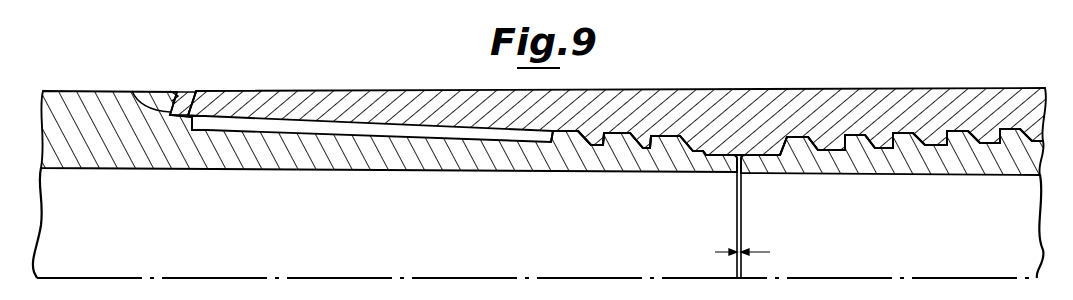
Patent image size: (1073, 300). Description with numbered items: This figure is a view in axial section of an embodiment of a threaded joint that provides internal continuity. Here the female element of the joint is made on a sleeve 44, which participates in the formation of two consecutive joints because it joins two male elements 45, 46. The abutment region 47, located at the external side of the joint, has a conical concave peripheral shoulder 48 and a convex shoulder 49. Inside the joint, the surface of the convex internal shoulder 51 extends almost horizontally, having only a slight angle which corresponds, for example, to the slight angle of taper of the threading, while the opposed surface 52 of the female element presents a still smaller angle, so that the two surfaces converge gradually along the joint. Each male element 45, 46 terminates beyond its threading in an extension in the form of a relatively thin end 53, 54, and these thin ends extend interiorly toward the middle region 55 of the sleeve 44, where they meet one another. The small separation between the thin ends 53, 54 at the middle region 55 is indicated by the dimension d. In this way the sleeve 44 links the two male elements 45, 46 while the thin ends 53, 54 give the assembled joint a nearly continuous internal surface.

The sleeve 44 is at (425, 90).
The male element 45 is at (376, 146).
The male element 46 is at (884, 160).
The abutment region 47 is at (172, 86).
The conical concave peripheral shoulder 48 is at (133, 92).
The convex shoulder 49 is at (197, 93).
The convex internal shoulder 51 is at (172, 113).
The opposed surface of the female element 52 is at (207, 93).
The thin end 53 is at (713, 163).
The thin end 54 is at (763, 165).
The middle region of the sleeve 55 is at (725, 147).
The gap width d is at (772, 250).